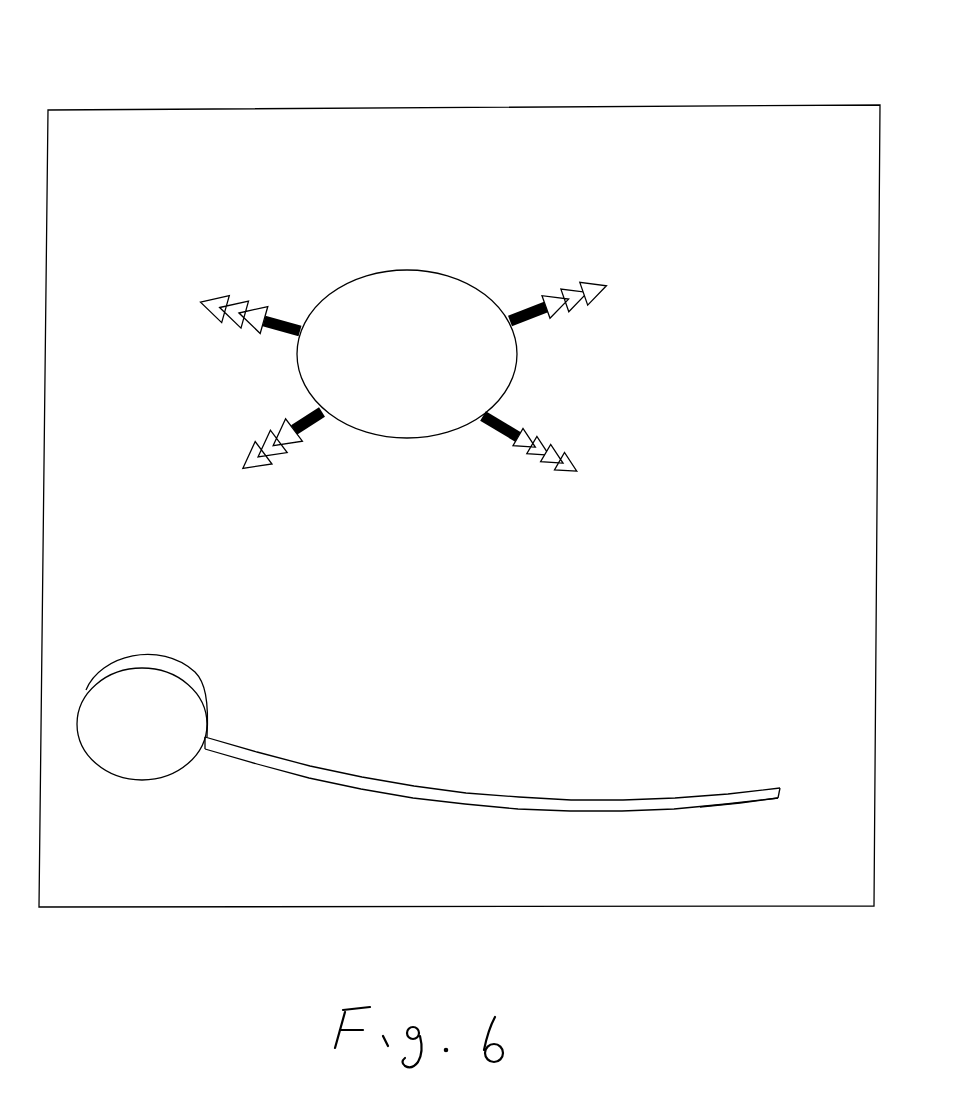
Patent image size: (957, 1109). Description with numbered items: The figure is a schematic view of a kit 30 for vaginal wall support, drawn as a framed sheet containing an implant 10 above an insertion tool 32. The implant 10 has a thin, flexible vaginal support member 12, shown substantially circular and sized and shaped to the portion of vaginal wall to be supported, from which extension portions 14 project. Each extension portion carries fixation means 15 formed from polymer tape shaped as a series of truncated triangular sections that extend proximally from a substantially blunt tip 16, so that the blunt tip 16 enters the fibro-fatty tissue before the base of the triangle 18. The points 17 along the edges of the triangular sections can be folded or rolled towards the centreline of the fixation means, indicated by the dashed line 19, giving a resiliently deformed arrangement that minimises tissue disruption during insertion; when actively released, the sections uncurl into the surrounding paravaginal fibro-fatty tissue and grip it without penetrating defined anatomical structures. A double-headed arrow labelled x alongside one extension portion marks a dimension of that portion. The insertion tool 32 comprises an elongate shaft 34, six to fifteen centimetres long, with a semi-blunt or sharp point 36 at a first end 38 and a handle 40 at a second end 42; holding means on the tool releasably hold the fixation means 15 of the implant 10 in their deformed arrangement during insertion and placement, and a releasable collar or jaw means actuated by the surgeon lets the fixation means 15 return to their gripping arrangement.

In FIG. 1, the implant 10 is at (464, 354).
In FIG. 1, the vaginal support member 12 is at (385, 268).
In FIG. 1, the extension portion 14 is at (620, 270).
In FIG. 1, the fixation means 15 is at (541, 472).
In FIG. 1, the blunt tip 16 is at (607, 290).
In FIG. 1, the points of the triangular sections 17 is at (548, 442).
In FIG. 1, the base of the triangle 18 is at (598, 300).
In FIG. 1, the centreline 19 is at (576, 468).
In FIG. 6, the kit 30 is at (470, 107).
In FIG. 6, the insertion tool 32 is at (453, 740).
In FIG. 6, the elongate shaft 34 is at (445, 788).
In FIG. 6, the semi-blunt or sharp point 36 is at (782, 786).
In FIG. 6, the first end 38 is at (748, 798).
In FIG. 6, the handle 40 is at (172, 695).
In FIG. 6, the second end 42 is at (207, 735).
In FIG. 1, the arm length dimension x is at (197, 273).